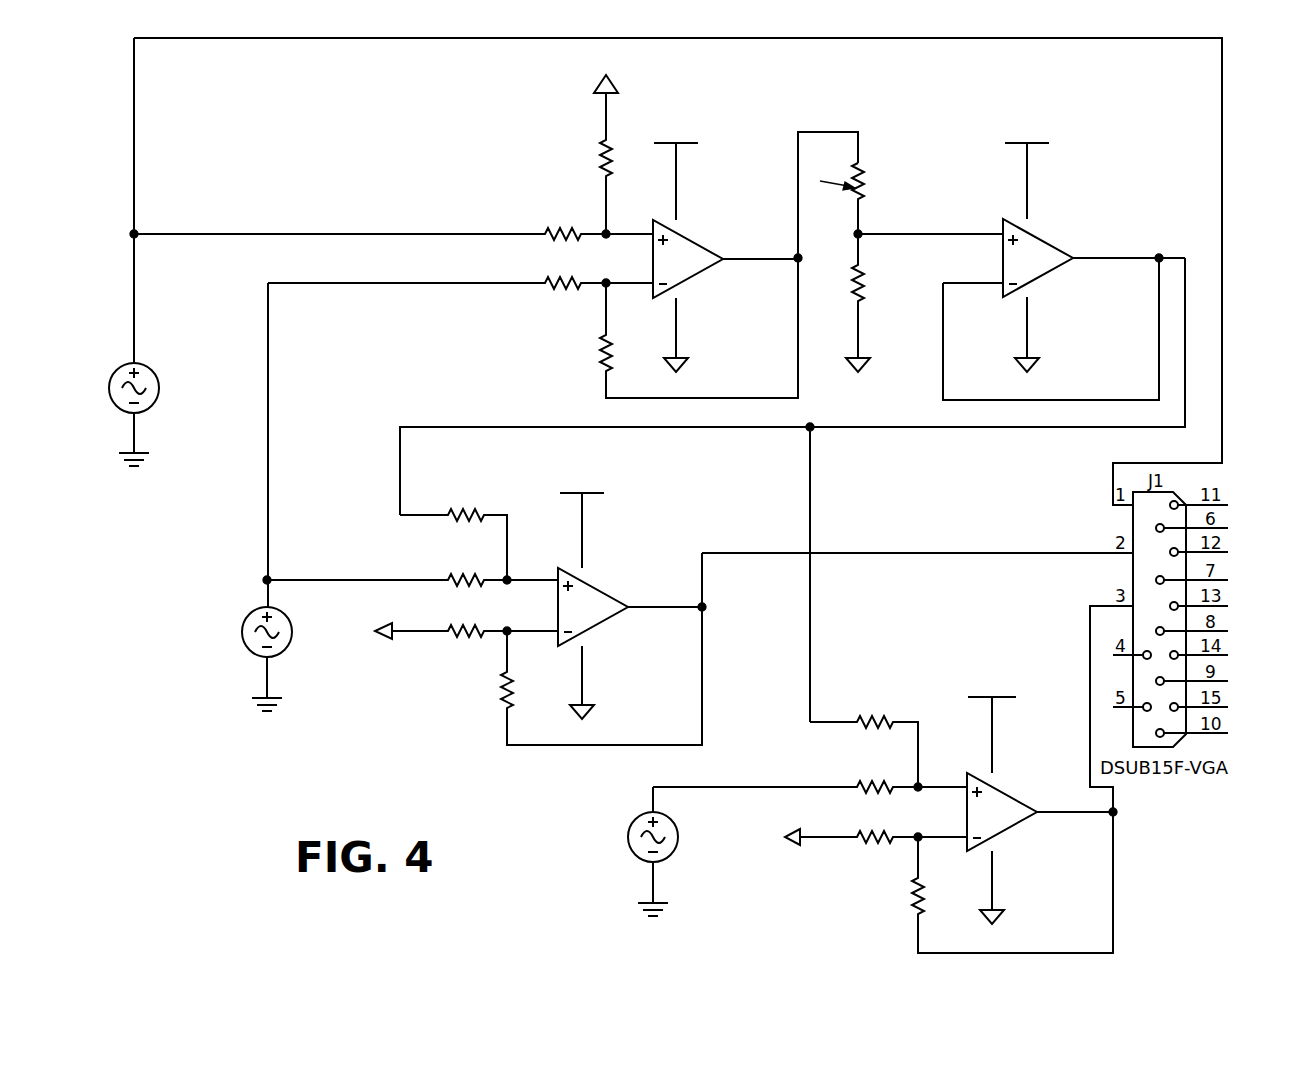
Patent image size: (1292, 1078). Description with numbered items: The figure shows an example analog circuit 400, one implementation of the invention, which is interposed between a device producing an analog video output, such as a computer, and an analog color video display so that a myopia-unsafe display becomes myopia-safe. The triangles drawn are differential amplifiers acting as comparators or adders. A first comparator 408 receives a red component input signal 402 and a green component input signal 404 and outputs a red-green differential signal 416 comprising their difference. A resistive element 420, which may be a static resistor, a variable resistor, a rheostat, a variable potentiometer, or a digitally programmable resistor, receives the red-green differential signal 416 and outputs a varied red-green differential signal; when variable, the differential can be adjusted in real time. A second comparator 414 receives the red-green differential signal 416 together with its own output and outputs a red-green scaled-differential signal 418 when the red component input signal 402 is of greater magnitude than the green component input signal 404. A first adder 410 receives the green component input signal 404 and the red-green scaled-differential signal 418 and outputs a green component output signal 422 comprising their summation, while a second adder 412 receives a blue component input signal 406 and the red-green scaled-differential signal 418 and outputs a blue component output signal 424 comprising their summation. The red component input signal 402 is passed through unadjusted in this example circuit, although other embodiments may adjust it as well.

The analog circuit 400 is at (1268, 119).
The red component input signal 402 is at (134, 337).
The green component input signal 404 is at (267, 553).
The blue component input signal 406 is at (653, 800).
The first comparator 408 is at (653, 256).
The first adder 410 is at (558, 568).
The second adder 412 is at (967, 780).
The second comparator 414 is at (1003, 218).
The red-green differential signal 416 is at (798, 170).
The red-green scaled-differential signal 418 is at (1159, 258).
The resistive element 420 is at (858, 175).
The green component output signal 422 is at (737, 553).
The blue component output signal 424 is at (1090, 630).